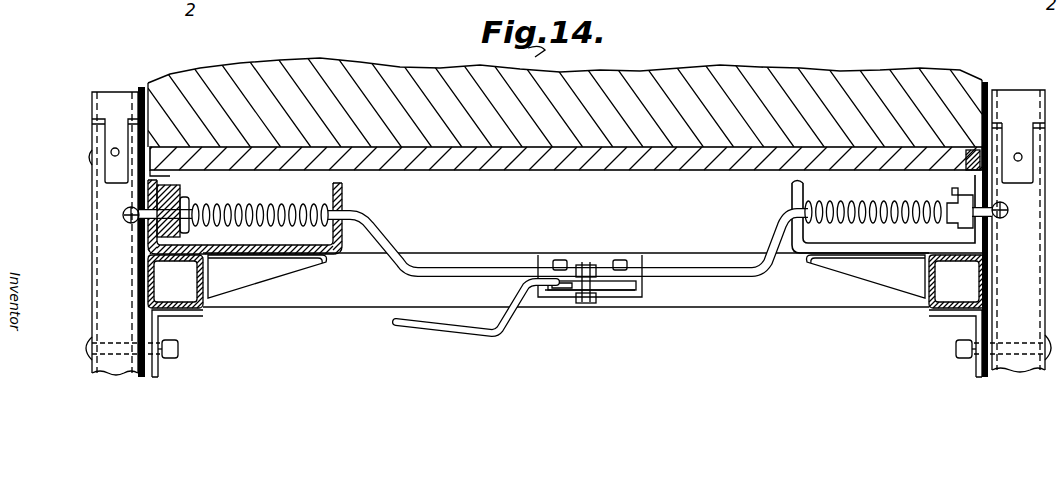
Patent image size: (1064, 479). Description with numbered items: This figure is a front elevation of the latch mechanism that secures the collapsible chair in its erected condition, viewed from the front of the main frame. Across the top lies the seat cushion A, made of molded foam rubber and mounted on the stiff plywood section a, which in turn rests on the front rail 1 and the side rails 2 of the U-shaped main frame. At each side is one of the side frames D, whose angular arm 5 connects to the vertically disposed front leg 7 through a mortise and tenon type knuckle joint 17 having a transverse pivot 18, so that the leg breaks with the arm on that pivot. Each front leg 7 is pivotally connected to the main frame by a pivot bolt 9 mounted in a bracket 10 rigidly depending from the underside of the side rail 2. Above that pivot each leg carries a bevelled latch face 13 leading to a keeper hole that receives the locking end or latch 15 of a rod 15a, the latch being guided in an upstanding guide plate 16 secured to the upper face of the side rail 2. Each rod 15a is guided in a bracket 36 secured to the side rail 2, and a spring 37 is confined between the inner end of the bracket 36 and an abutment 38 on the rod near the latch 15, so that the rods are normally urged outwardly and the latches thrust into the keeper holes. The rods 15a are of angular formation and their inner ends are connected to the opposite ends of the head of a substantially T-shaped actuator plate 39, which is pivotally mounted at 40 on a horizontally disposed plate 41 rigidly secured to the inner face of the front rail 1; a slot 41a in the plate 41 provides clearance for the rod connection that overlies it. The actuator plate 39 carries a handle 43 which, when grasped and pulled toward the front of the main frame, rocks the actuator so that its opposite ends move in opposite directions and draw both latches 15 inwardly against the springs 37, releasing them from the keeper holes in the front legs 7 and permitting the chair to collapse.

The front rail 1 is at (770, 302).
The side rails 2 is at (196, 295).
The angular arms 5 is at (1020, 95).
The front legs 7 is at (115, 313).
The pivot bolts 9 is at (87, 358).
The brackets 10 is at (170, 327).
The bevelled latch face 13 is at (125, 219).
The latches 15 is at (130, 226).
The rods 15a is at (386, 245).
The guide plates 16 is at (968, 150).
The knuckle joints 17 is at (92, 130).
The transverse pivots 18 is at (90, 156).
The brackets 36 is at (344, 209).
The springs 37 is at (270, 210).
The abutments 38 is at (165, 222).
The T-shaped actuator plate 39 is at (602, 272).
The pivot 40 is at (580, 262).
The plate 41 is at (627, 297).
The slot 41a is at (553, 293).
The handle 43 is at (427, 336).
The seat cushion A is at (832, 67).
The side frames D is at (100, 83).
The plywood section a is at (860, 150).